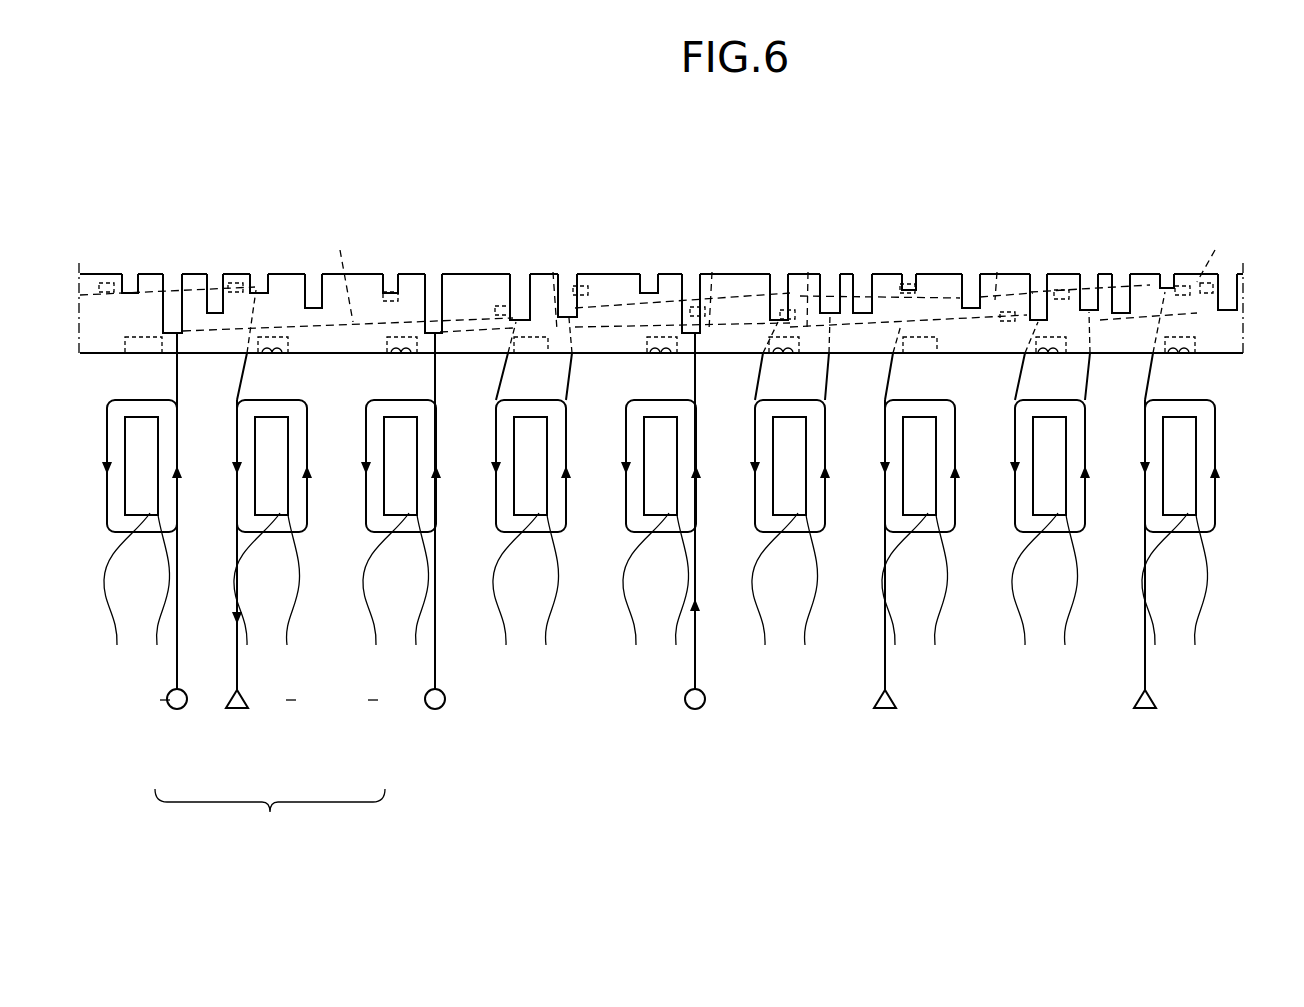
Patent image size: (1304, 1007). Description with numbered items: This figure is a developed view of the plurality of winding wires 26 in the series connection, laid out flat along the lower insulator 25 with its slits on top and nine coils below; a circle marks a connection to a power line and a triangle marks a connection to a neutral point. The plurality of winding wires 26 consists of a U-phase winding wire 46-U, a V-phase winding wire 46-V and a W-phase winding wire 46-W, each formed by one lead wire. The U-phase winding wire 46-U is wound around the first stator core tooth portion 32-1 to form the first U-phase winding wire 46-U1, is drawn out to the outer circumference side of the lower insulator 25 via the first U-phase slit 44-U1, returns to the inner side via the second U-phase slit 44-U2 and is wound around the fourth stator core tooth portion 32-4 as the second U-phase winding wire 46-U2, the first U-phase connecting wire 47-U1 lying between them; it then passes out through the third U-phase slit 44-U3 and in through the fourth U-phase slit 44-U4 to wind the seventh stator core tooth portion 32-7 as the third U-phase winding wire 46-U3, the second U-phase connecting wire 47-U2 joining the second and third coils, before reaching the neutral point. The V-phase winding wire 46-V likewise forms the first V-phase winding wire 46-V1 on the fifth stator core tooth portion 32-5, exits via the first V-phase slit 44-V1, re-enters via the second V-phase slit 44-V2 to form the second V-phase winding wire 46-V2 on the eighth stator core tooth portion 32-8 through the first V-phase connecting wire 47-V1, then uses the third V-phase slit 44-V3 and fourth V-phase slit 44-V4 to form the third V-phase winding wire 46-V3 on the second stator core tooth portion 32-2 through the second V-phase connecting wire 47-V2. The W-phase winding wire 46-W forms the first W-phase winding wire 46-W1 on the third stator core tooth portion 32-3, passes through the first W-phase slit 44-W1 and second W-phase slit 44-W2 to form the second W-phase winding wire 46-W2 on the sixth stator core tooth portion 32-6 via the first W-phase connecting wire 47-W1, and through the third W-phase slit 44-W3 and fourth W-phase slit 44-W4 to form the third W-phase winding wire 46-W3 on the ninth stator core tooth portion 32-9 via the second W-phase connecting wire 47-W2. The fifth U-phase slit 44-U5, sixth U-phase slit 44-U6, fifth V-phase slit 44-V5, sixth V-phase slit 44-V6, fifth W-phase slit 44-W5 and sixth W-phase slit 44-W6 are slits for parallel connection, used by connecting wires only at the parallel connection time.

The lower insulator 25 is at (1240, 326).
The plurality of winding wires 26 is at (270, 815).
The first stator core tooth portion 32-1 is at (142, 523).
The second stator core tooth portion 32-2 is at (272, 523).
The third stator core tooth portion 32-3 is at (401, 523).
The fourth stator core tooth portion 32-4 is at (531, 523).
The fifth stator core tooth portion 32-5 is at (661, 523).
The sixth stator core tooth portion 32-6 is at (790, 523).
The seventh stator core tooth portion 32-7 is at (920, 523).
The eighth stator core tooth portion 32-8 is at (1050, 523).
The ninth stator core tooth portion 32-9 is at (1180, 523).
The first U-phase slit 44-U1 is at (172, 270).
The second U-phase slit 44-U2 is at (520, 270).
The third U-phase slit 44-U3 is at (567, 270).
The fourth U-phase slit 44-U4 is at (909, 270).
The fifth U-phase slit 44-U5 is at (862, 270).
The sixth U-phase slit 44-U6 is at (130, 270).
The first V-phase slit 44-V1 is at (691, 270).
The second V-phase slit 44-V2 is at (1038, 270).
The third V-phase slit 44-V3 is at (1089, 270).
The fourth V-phase slit 44-V4 is at (259, 270).
The fifth V-phase slit 44-V5 is at (215, 270).
The sixth V-phase slit 44-V6 is at (649, 270).
The first W-phase slit 44-W1 is at (433, 270).
The second W-phase slit 44-W2 is at (779, 270).
The third W-phase slit 44-W3 is at (830, 270).
The fourth W-phase slit 44-W4 is at (1167, 270).
The fifth W-phase slit 44-W5 is at (1121, 270).
The sixth W-phase slit 44-W6 is at (390, 270).
The U-phase winding wire 46-U is at (157, 692).
The V-phase winding wire 46-V is at (291, 692).
The W-phase winding wire 46-W is at (373, 692).
The first U-phase winding wire 46-U1 is at (143, 521).
The second U-phase winding wire 46-U2 is at (534, 495).
The third U-phase winding wire 46-U3 is at (909, 516).
The first V-phase winding wire 46-V1 is at (662, 521).
The second V-phase winding wire 46-V2 is at (1052, 492).
The third V-phase winding wire 46-V3 is at (269, 499).
The first W-phase winding wire 46-W1 is at (401, 521).
The second W-phase winding wire 46-W2 is at (792, 493).
The third W-phase winding wire 46-W3 is at (1179, 500).
The first U-phase connecting wire 47-U1 is at (340, 250).
The second U-phase connecting wire 47-U2 is at (712, 272).
The first V-phase connecting wire 47-V1 is at (808, 272).
The second V-phase connecting wire 47-V2 is at (1215, 250).
The first W-phase connecting wire 47-W1 is at (553, 272).
The second W-phase connecting wire 47-W2 is at (997, 272).